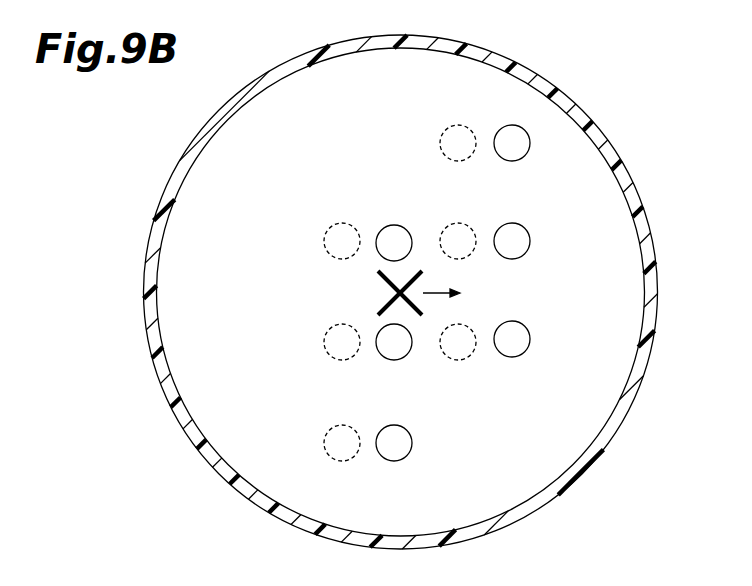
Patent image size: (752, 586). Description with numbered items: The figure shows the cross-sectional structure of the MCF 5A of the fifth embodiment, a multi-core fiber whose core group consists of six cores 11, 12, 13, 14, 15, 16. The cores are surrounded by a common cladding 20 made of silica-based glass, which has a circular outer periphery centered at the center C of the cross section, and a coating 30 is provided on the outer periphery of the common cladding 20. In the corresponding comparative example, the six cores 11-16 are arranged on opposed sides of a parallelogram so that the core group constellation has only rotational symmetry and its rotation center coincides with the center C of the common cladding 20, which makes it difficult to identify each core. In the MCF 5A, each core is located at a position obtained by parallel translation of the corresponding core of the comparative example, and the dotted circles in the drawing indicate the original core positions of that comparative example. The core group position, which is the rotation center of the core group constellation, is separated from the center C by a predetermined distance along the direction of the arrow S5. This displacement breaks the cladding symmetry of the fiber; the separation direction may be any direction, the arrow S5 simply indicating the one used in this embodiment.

The MCF 5A is at (632, 108).
The core 11 is at (412, 443).
The core 12 is at (407, 355).
The core 13 is at (393, 225).
The core 14 is at (530, 337).
The core 15 is at (530, 241).
The core 16 is at (526, 155).
The common cladding 20 is at (617, 252).
The coating 30 is at (612, 422).
The center C is at (392, 292).
The arrow S5 is at (435, 291).